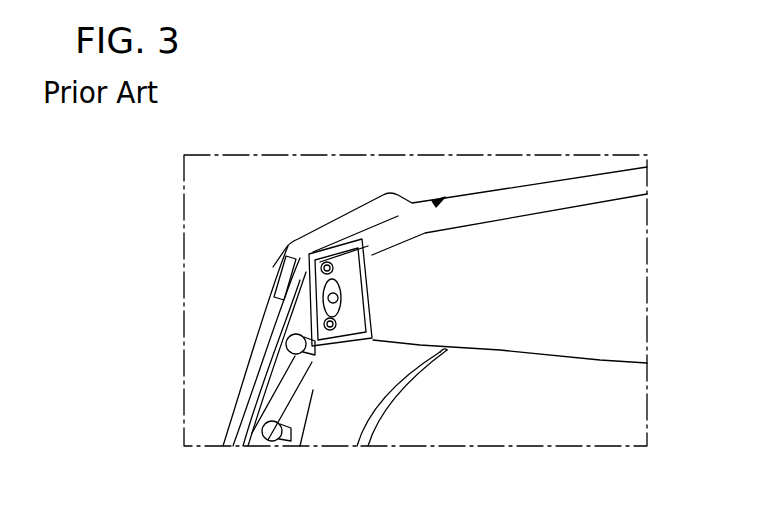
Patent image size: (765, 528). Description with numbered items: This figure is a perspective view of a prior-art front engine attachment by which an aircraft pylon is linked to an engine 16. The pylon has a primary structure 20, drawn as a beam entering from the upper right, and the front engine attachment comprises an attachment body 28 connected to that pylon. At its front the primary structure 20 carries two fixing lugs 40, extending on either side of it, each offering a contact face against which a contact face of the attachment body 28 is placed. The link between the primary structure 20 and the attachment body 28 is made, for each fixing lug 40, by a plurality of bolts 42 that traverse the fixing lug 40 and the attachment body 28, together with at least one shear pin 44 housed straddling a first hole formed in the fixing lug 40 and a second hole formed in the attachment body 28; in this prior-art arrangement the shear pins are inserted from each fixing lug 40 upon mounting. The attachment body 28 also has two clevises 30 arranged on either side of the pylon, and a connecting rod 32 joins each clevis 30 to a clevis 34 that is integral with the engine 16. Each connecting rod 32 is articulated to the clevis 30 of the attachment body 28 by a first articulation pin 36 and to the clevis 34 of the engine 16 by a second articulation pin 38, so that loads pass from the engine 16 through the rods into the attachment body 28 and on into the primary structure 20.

The engine 16 is at (383, 423).
The primary structure 20 is at (522, 197).
The attachment body 28 is at (336, 228).
The clevis 30 is at (262, 293).
The connecting rod 32 is at (268, 378).
The clevis 34 is at (252, 433).
The first articulation pin 36 is at (318, 356).
The second articulation pin 38 is at (287, 436).
The fixing lug 40 is at (275, 268).
The bolt 42 is at (337, 325).
The shear pin 44 is at (342, 297).